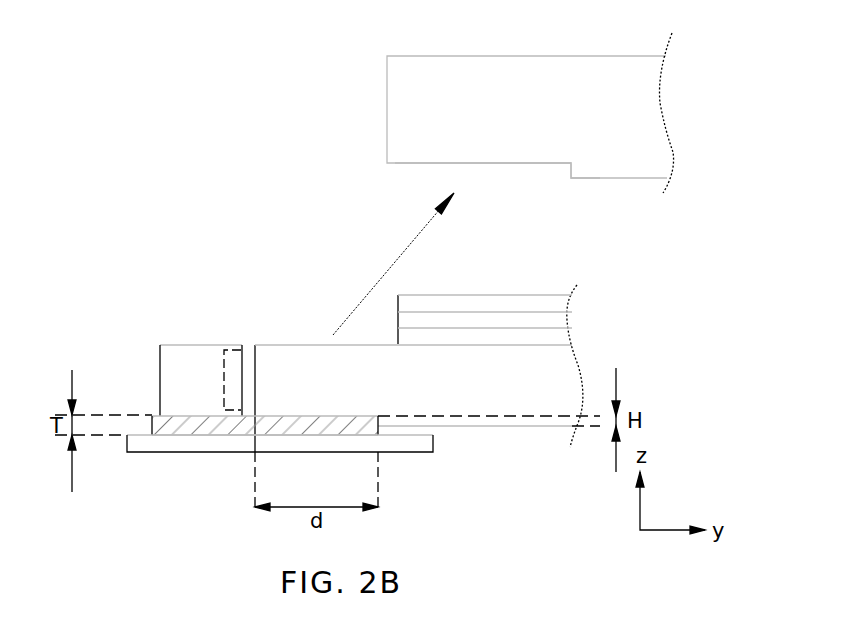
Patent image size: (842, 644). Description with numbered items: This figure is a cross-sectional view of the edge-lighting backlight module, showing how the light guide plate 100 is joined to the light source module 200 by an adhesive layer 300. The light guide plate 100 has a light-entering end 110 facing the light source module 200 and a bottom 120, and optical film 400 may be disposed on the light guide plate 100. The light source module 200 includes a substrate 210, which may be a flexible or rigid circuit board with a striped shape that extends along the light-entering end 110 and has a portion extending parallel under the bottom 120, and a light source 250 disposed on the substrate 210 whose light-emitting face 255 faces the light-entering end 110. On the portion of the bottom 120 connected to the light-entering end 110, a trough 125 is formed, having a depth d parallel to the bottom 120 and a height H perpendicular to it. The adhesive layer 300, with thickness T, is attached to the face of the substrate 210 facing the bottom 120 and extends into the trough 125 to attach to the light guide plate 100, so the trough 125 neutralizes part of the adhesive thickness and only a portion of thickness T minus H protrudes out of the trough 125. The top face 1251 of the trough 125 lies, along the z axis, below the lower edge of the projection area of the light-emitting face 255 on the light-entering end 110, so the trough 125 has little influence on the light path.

The light guide plate 100 is at (642, 34).
The top face of the trough 1251 is at (420, 164).
The trough 125 is at (494, 184).
The light-entering end 110 is at (254, 358).
The optical film 400 is at (573, 295).
The light source module 200 is at (146, 367).
The light-emitting face 255 is at (242, 376).
The light source 250 is at (197, 402).
The substrate 210 is at (138, 443).
The adhesive layer 300 is at (325, 425).
The bottom 120 is at (502, 428).